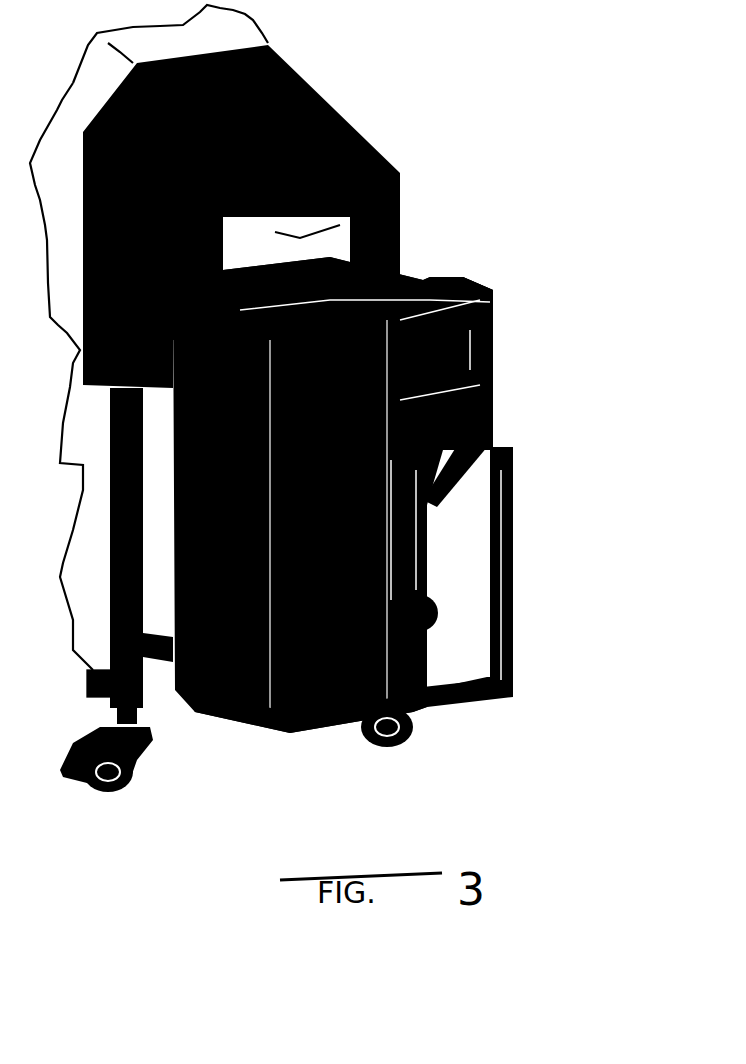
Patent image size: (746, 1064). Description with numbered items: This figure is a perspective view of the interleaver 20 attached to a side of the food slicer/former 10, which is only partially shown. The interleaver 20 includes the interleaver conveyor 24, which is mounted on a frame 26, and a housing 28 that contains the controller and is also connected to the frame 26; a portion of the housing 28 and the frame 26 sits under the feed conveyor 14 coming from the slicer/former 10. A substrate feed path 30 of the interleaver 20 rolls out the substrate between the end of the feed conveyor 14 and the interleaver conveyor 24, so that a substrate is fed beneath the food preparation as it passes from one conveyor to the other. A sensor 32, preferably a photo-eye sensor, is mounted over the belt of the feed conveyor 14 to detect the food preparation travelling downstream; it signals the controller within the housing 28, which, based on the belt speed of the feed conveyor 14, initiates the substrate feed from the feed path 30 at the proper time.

The slicer/former 10 is at (352, 110).
The sensor 32 is at (400, 212).
The feed conveyor 14 is at (397, 268).
The substrate feed path 30 is at (427, 280).
The interleaver conveyor 24 is at (492, 313).
The interleaver 20 is at (505, 373).
The frame 26 is at (513, 540).
The housing 28 is at (237, 720).